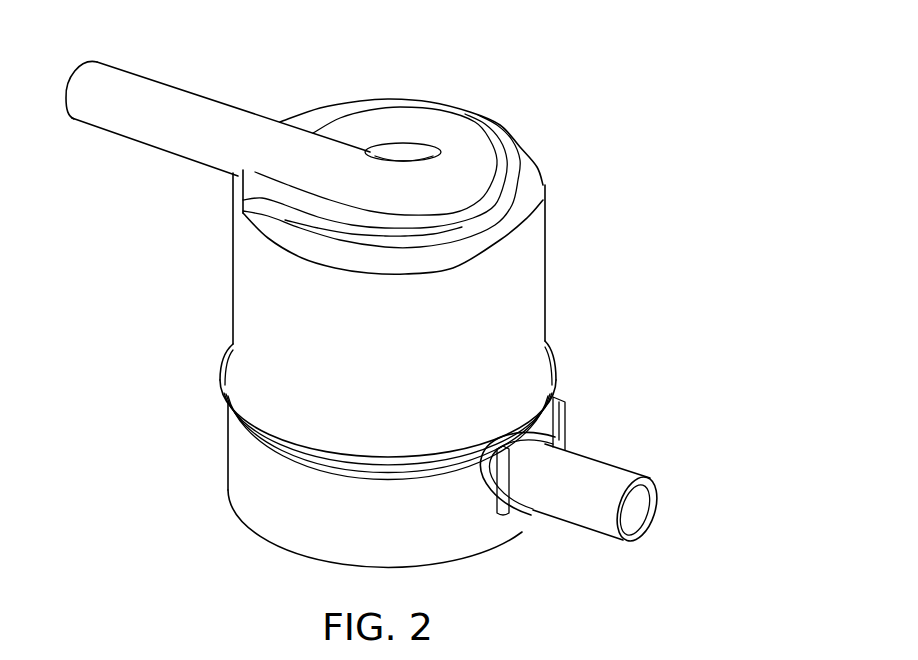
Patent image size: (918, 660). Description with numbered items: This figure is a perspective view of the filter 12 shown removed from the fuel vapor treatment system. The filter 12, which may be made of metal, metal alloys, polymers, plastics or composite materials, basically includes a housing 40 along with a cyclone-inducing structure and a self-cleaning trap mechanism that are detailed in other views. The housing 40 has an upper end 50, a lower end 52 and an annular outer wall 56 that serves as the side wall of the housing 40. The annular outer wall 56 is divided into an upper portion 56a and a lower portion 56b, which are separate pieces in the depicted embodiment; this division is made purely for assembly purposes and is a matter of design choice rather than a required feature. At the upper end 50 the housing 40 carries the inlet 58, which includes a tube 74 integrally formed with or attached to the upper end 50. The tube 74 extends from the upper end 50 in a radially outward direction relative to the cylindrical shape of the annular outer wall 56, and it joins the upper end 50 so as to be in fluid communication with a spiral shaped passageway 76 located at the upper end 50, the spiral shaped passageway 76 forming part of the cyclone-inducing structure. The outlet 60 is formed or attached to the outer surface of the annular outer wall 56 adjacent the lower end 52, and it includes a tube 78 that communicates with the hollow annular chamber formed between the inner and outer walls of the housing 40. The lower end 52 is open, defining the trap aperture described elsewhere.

The filter 12 is at (559, 148).
The housing 40 is at (525, 300).
The upper end 50 is at (330, 113).
The lower end 52 is at (257, 532).
The annular outer wall 56 is at (163, 328).
The upper portion 56a is at (260, 303).
The lower portion 56b is at (243, 457).
The inlet 58 is at (203, 120).
The outlet 60 is at (598, 478).
The tube 74 is at (102, 117).
The spiral shaped passageway 76 is at (457, 135).
The tube 78 is at (637, 510).